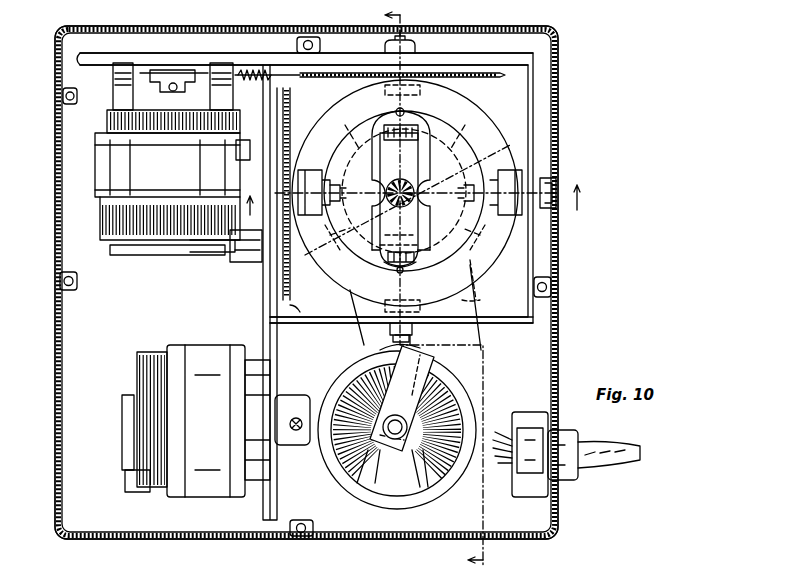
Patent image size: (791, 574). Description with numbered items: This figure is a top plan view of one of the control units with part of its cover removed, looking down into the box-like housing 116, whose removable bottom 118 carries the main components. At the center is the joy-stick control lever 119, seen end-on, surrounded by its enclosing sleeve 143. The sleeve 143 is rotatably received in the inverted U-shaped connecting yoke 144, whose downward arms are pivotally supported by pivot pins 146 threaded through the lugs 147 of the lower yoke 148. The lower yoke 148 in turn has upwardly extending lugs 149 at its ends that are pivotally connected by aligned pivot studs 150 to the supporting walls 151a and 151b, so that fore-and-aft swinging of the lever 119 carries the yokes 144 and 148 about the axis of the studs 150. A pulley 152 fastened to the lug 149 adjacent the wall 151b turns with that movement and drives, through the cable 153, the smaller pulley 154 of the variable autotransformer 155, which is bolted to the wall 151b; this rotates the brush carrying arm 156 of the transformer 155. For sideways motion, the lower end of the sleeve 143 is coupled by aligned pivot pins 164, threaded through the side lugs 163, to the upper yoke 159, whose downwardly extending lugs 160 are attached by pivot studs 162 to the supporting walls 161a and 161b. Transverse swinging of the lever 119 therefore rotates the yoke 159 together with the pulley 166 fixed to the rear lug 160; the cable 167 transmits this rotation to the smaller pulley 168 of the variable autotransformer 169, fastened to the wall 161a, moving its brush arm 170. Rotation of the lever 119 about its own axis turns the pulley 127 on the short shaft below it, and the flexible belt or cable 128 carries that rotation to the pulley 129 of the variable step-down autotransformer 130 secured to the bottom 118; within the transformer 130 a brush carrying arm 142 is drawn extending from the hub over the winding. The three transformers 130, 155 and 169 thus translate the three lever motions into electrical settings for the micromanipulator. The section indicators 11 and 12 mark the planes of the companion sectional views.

The section line 11 is at (452, 289).
The direction arrow 12 is at (416, 211).
The box-like structure 116 is at (571, 66).
The removable bottom 118 is at (560, 116).
The control lever 119 is at (468, 136).
The pulley 127 is at (455, 110).
The flexible belt or cable 128 is at (352, 298).
The pulley 129 is at (455, 472).
The variable step-down autotransformer 130 is at (437, 502).
The arm 142 is at (442, 366).
The enclosing sleeve 143 is at (412, 186).
The connecting yoke 144 is at (366, 128).
The pivot pins 146 is at (404, 278).
The lugs 147 is at (416, 126).
The lower yoke 148 is at (313, 132).
The lugs 149 is at (580, 150).
The pivot studs 150 is at (556, 188).
The supporting wall 151a is at (533, 263).
The supporting wall 151b is at (270, 300).
The pulley 152 is at (268, 268).
The cable 153 is at (280, 312).
The pulley 154 is at (296, 396).
The variable autotransformer 155 is at (148, 349).
The brush carrying arm 156 is at (125, 485).
The upper yoke 159 is at (462, 278).
The lug 160 is at (422, 90).
The supporting wall 161a is at (455, 63).
The supporting wall 161b is at (322, 327).
The pivot studs 162 is at (416, 44).
The side lugs 163 is at (410, 236).
The pivot pins 164 is at (407, 189).
The pulley 166 is at (533, 82).
The cable 167 is at (280, 65).
The pulley 168 is at (160, 72).
The variable autotransformer 169 is at (95, 201).
The brush arm 170 is at (200, 256).